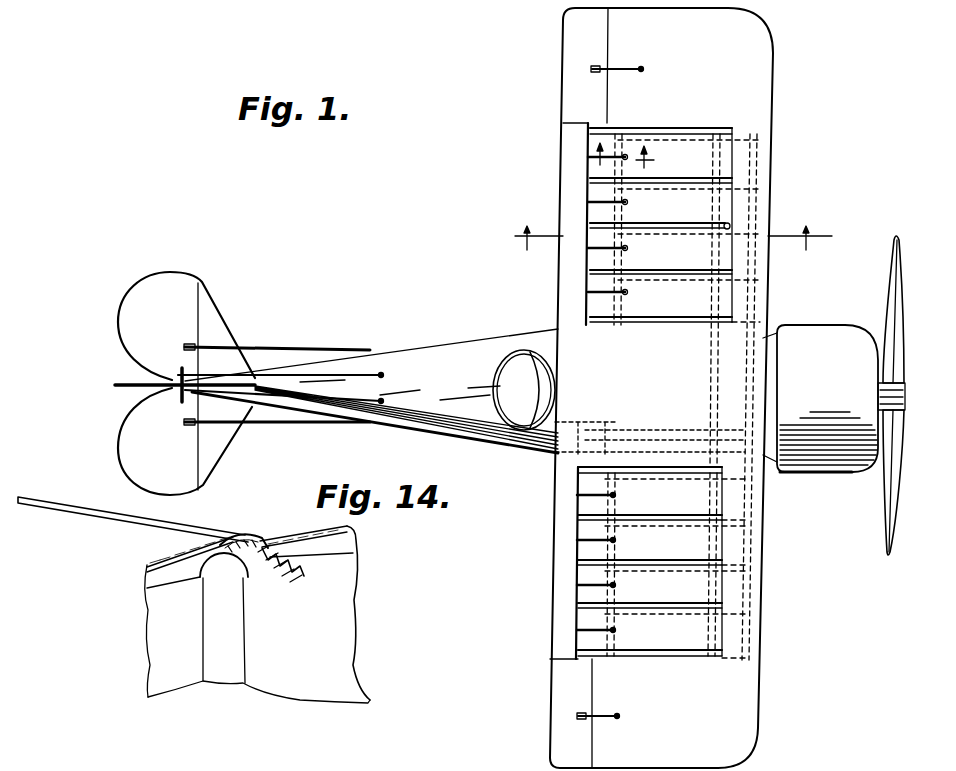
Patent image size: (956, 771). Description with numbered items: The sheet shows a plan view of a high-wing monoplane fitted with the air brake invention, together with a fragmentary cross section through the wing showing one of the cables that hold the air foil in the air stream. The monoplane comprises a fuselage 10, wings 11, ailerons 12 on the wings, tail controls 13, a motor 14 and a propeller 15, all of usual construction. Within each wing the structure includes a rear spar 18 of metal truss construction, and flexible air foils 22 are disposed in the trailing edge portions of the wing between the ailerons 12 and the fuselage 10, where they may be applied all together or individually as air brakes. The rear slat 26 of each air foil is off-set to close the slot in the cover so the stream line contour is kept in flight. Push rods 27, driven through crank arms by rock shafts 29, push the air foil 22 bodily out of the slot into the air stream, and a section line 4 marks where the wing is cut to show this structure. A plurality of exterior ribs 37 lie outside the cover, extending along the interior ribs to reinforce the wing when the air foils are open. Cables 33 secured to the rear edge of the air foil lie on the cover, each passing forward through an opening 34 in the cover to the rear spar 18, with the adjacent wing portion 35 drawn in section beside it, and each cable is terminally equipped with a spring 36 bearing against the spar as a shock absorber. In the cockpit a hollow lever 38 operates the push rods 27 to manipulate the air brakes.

In FIG. 1, the fuselage 10 is at (537, 454).
In FIG. 1, the wings 11 is at (770, 166).
In FIG. 1, the ailerons 12 is at (576, 50).
In FIG. 1, the tail controls 13 is at (240, 368).
In FIG. 1, the motor 14 is at (847, 340).
In FIG. 1, the propeller 15 is at (903, 345).
In FIG. 14, the rear spar 18 is at (230, 632).
In FIG. 1, the air foil 22 is at (640, 286).
In FIG. 1, the rear slat 26 is at (587, 166).
In FIG. 1, the push rods 27 is at (682, 142).
In FIG. 1, the rock shafts 29 is at (732, 525).
In FIG. 1, the cables 33 is at (622, 200).
In FIG. 14, the cables 33 is at (108, 520).
In FIG. 14, the opening 34 is at (240, 536).
In FIG. 14, the wing section 35 is at (352, 602).
In FIG. 14, the spring 36 is at (290, 580).
In FIG. 1, the exterior ribs 37 is at (680, 131).
In FIG. 1, the hollow lever 38 is at (555, 403).
In FIG. 1, the section line 4- 4 is at (673, 248).